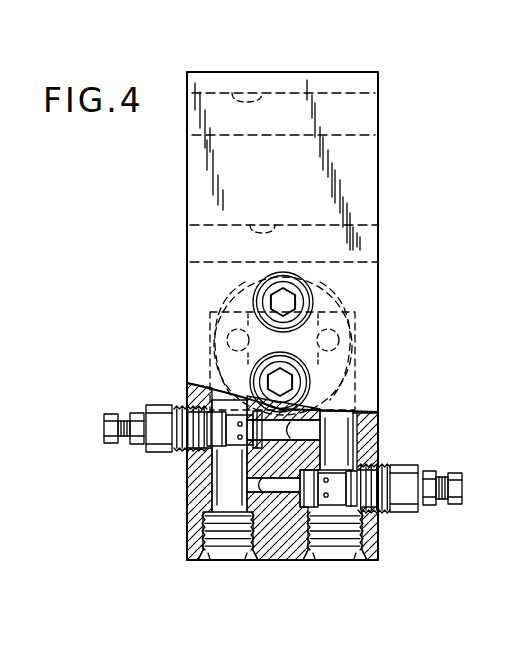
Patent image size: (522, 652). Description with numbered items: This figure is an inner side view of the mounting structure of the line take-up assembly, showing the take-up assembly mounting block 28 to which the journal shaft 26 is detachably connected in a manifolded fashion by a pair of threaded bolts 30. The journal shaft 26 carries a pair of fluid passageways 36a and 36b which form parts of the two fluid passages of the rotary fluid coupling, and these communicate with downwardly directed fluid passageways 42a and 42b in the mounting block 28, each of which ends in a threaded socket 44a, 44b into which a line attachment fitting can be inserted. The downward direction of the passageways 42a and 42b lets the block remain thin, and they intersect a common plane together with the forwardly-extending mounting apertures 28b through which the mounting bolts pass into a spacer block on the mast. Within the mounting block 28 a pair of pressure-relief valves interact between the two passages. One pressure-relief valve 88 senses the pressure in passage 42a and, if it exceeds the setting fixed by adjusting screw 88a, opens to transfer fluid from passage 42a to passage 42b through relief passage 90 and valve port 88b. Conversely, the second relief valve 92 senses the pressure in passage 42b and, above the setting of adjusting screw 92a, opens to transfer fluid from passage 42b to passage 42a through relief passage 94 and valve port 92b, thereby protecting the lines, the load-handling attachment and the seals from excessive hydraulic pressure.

The journal shaft 26 is at (345, 292).
The take-up assembly mounting block 28 is at (328, 72).
The mounting apertures 28b is at (263, 93).
The threaded bolts 30 is at (283, 295).
The fluid passageway 36a is at (240, 337).
The fluid passageway 36b is at (330, 339).
The downwardly directed fluid passageway 42a is at (278, 407).
The downwardly directed fluid passageway 42b is at (345, 425).
The threaded socket 44a is at (230, 560).
The threaded socket 44b is at (338, 560).
The pressure-relief valve 88 is at (403, 465).
The adjusting screw 88a is at (463, 490).
The valve port 88b is at (332, 478).
The relief passage 90 is at (262, 485).
The pressure-relief valve 92 is at (162, 403).
The adjusting screw 92a is at (100, 432).
The valve port 92b is at (225, 446).
The relief passage 94 is at (336, 440).